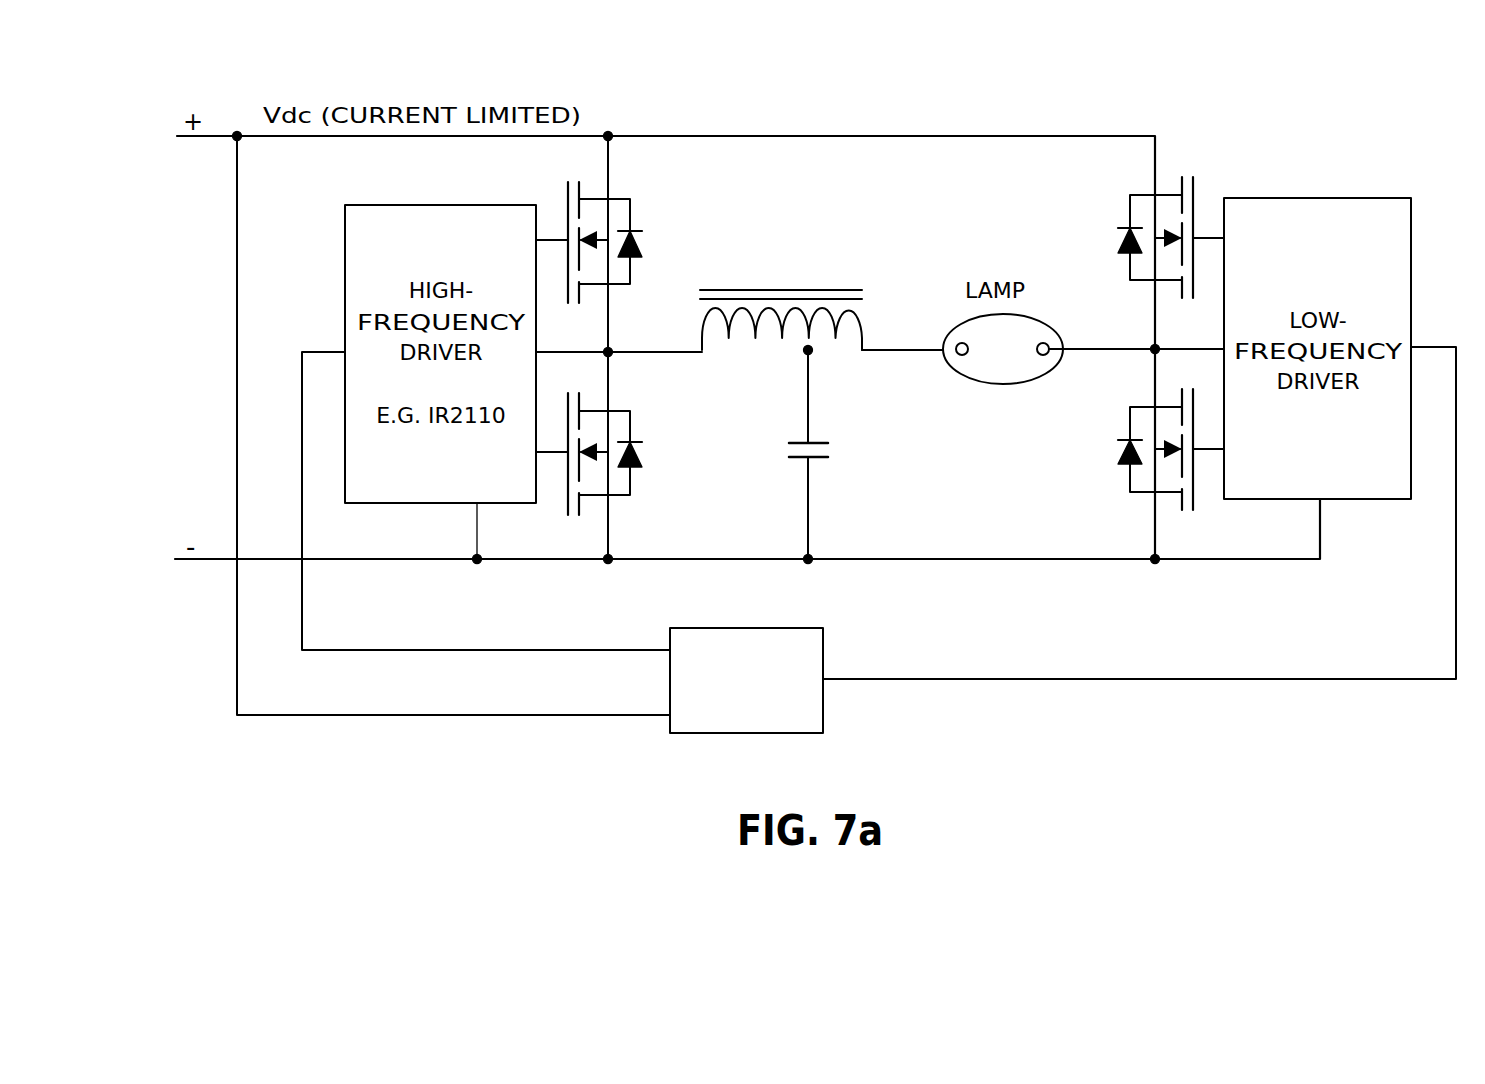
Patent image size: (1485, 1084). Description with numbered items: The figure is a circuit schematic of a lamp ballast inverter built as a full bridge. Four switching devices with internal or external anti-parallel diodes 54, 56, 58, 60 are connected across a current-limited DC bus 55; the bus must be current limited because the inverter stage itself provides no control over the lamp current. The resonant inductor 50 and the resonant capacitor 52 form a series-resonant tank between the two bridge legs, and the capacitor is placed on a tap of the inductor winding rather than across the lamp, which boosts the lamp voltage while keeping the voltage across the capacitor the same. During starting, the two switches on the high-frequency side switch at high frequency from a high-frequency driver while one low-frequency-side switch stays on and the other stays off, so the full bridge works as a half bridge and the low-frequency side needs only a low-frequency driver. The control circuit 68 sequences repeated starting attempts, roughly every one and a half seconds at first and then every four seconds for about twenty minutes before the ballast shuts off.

The resonant inductor 50 is at (780, 289).
The resonant capacitor 52 is at (832, 474).
The switching device with anti-parallel diode 54 is at (656, 212).
The DC bus 55 is at (976, 134).
The switching device with anti-parallel diode 56 is at (656, 424).
The switching device with anti-parallel diode 58 is at (1117, 208).
The switching device with anti-parallel diode 60 is at (1116, 494).
The control circuit 68 is at (825, 649).